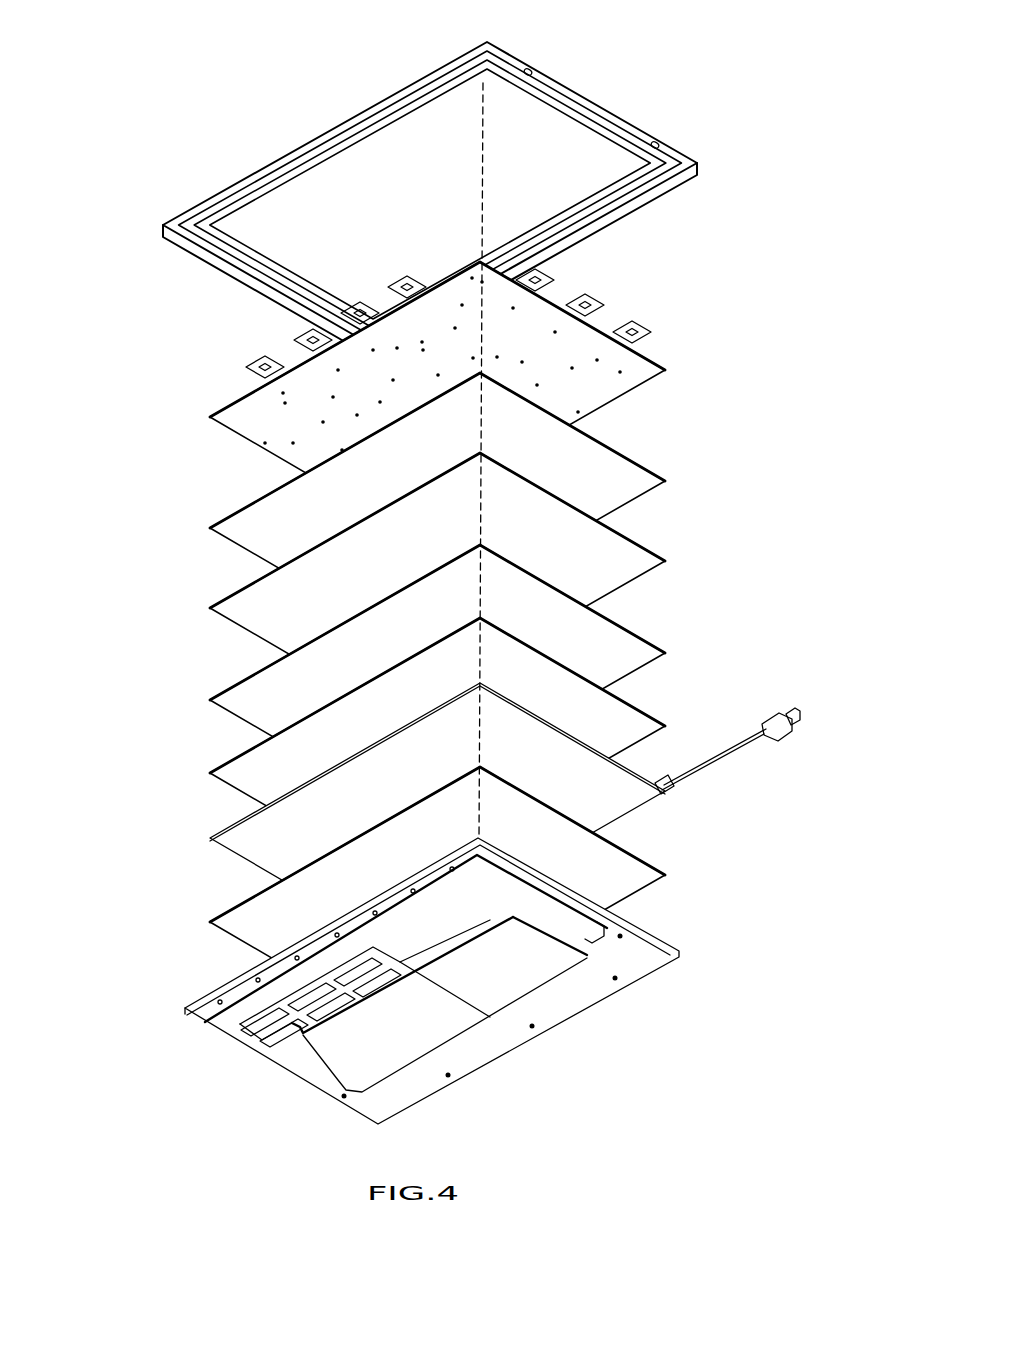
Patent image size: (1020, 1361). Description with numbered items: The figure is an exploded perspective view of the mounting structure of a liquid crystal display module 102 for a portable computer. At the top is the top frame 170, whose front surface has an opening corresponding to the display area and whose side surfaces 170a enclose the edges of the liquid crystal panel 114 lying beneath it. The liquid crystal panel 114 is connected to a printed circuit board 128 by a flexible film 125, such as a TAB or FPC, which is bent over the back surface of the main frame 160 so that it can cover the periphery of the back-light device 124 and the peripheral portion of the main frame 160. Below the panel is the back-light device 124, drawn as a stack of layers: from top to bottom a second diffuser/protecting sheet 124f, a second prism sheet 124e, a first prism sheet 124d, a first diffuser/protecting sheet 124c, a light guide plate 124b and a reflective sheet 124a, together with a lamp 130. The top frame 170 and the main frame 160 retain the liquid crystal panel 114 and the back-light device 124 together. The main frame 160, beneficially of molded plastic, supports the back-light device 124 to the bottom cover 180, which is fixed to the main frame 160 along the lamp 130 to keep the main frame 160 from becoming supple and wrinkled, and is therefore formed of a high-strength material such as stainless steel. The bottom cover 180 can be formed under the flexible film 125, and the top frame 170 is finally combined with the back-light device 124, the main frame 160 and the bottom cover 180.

The liquid crystal display module 102 is at (793, 191).
The top frame 170 is at (449, 181).
The side surfaces 170a is at (633, 128).
The liquid crystal panel 114 is at (456, 393).
The flexible film 125 is at (245, 366).
The back-light device 124 is at (90, 884).
The second diffuser/protecting sheet 124f is at (259, 514).
The second prism sheet 124e is at (244, 609).
The first prism sheet 124d is at (247, 703).
The first diffuser/protecting sheet 124c is at (250, 769).
The light guide plate 124b is at (245, 839).
The reflective sheet 124a is at (247, 921).
The lamp 130 is at (688, 784).
The printed circuit board 128 is at (206, 1020).
The main frame 160 is at (295, 1067).
The bottom cover 180 is at (412, 983).